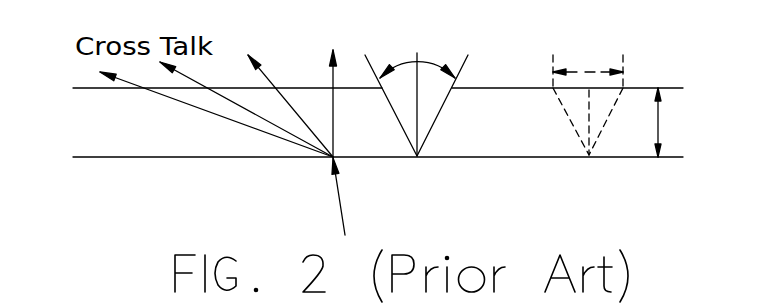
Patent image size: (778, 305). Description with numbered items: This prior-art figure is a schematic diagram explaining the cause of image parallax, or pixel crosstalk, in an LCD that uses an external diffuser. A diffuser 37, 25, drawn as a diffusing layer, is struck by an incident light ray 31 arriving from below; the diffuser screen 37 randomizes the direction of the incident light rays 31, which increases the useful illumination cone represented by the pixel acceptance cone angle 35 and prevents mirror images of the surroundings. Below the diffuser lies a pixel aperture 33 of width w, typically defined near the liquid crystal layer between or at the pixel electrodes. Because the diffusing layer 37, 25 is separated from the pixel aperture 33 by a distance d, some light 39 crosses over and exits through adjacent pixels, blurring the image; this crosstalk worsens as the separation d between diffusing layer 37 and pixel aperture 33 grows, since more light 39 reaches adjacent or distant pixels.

The diffuser 25 is at (158, 158).
The incident light ray 31 is at (328, 192).
The pixel aperture 33 is at (607, 57).
The pixel acceptance cone angle 35 is at (448, 120).
The diffuser 37 is at (365, 187).
The light 39 is at (182, 102).